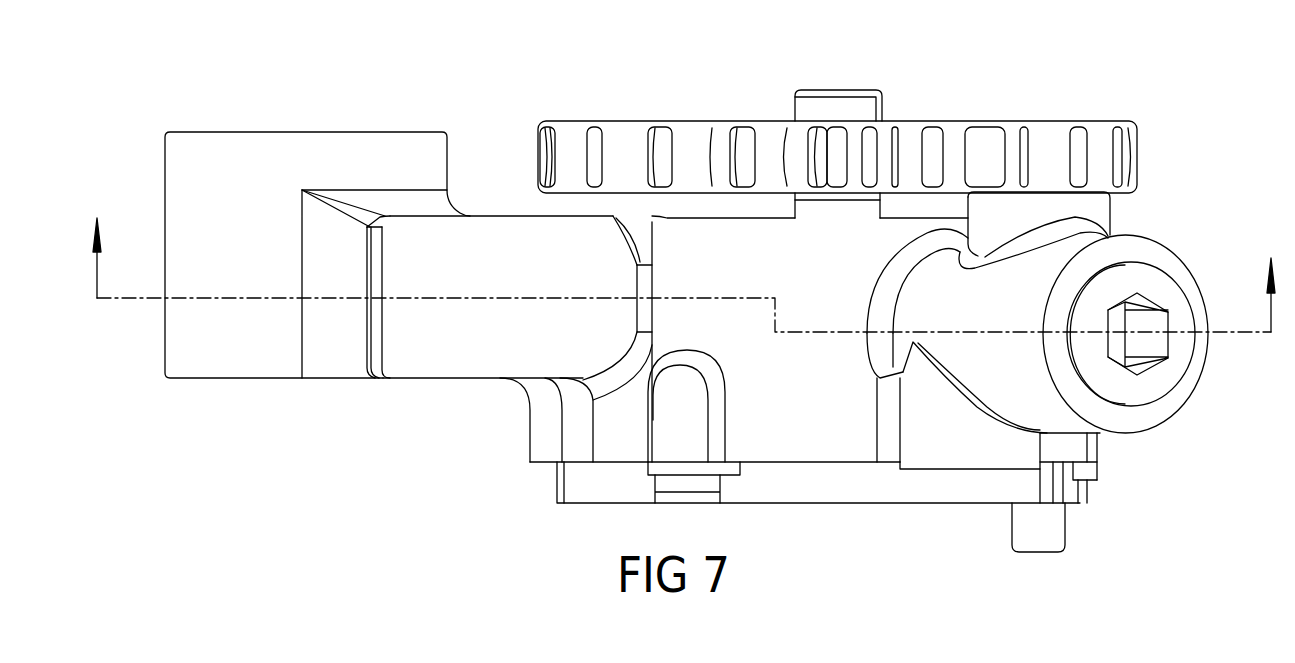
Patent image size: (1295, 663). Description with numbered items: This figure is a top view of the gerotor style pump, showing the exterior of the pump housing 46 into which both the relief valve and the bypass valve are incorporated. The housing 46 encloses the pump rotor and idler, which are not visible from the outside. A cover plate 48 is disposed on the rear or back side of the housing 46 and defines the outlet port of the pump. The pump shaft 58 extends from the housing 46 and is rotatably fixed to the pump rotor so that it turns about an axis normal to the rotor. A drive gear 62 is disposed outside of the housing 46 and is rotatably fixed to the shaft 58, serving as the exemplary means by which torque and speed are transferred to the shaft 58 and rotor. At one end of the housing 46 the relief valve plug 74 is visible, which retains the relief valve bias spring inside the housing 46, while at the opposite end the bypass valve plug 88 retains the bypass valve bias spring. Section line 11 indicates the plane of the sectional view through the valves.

The section line 11- 11 is at (687, 253).
The housing 46 is at (483, 349).
The cover plate 48 is at (862, 503).
The pump shaft 58 is at (868, 90).
The drive gear 62 is at (1137, 160).
The relief valve plug 74 is at (1177, 383).
The bypass valve plug 88 is at (376, 378).